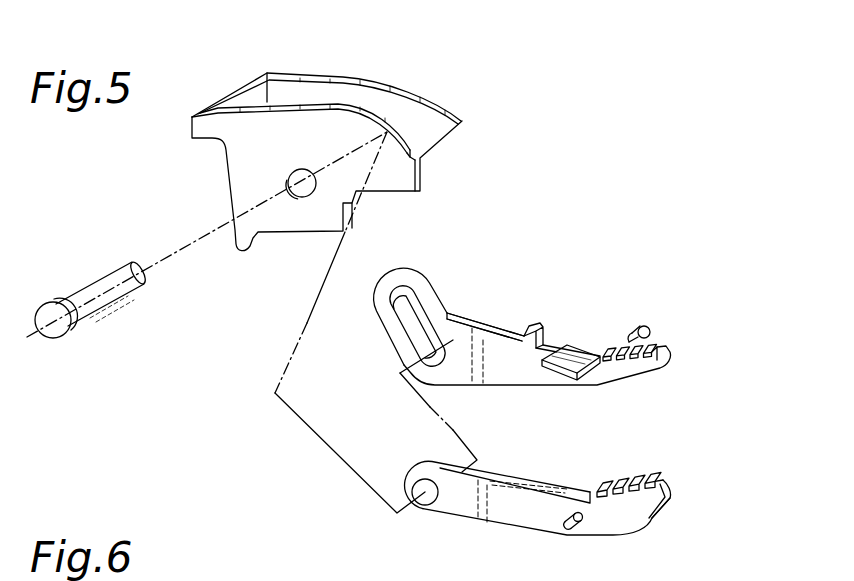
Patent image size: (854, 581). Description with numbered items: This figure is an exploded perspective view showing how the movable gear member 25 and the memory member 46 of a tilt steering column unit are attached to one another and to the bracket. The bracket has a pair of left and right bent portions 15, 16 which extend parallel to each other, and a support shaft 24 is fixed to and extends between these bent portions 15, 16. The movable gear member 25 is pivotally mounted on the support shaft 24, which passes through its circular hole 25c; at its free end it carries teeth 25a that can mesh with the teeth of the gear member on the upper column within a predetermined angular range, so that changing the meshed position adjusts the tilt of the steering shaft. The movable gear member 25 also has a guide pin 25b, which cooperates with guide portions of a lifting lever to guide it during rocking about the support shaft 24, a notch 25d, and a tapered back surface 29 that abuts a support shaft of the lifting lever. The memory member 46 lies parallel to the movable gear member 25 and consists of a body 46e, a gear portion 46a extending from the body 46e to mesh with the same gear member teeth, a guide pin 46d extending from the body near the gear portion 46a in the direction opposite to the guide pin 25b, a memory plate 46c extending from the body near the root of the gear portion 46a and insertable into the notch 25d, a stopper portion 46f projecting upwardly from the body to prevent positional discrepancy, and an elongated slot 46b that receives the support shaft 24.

The bent portion 15 is at (313, 93).
The bent portion 16 is at (245, 177).
The support shaft 24 is at (100, 293).
The memory member 46 is at (422, 295).
The gear portion 46a is at (657, 346).
The elongated slot 46b is at (417, 330).
The memory plate 46c is at (577, 374).
The guide pin 46d is at (637, 328).
The body 46e is at (488, 342).
The stopper portion 46f is at (543, 332).
The movable gear member 25 is at (500, 510).
The teeth 25a is at (640, 478).
The guide pin 25b is at (573, 533).
The circular hole 25c is at (425, 506).
The notch 25d is at (590, 492).
The tapered back surface 29 is at (647, 530).